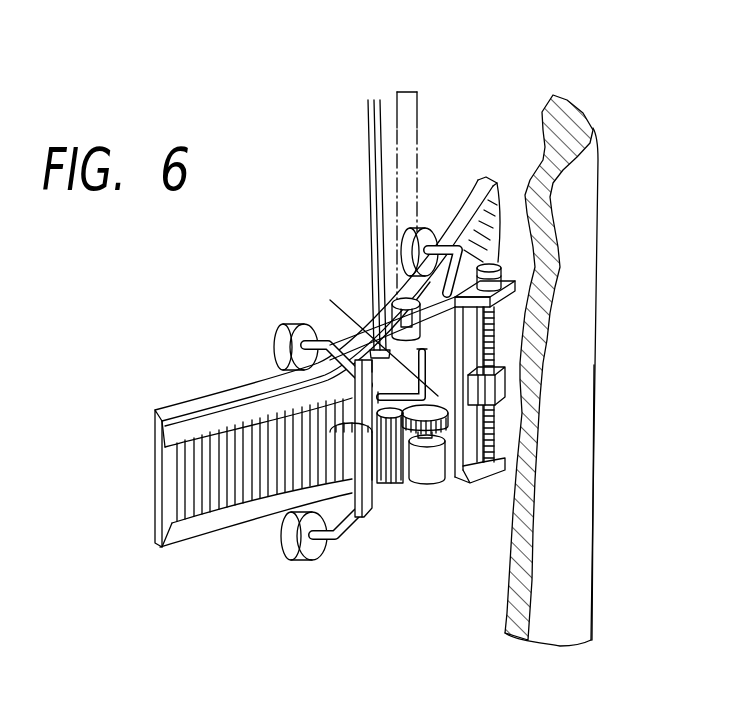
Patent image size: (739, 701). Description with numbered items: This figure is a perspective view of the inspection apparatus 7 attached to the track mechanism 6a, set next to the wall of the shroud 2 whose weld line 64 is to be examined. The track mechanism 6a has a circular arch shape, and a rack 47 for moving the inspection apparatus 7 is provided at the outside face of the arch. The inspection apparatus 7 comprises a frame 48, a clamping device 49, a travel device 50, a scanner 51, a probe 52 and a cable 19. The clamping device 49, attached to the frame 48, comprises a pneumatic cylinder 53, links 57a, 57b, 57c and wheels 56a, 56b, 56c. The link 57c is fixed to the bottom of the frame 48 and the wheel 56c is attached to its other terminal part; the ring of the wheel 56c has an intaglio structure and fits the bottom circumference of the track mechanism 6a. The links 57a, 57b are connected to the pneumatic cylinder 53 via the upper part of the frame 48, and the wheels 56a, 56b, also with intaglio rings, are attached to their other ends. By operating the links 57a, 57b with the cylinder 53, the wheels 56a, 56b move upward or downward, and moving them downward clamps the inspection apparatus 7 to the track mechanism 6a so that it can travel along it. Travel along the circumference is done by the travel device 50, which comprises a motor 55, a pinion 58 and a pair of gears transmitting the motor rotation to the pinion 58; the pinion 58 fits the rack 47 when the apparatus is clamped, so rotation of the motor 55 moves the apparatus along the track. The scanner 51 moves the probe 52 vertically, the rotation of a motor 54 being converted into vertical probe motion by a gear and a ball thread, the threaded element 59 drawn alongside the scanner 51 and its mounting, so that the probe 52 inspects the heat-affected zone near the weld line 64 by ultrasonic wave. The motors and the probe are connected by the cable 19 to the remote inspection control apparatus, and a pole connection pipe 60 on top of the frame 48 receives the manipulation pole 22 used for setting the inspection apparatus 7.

The shroud 2 is at (580, 606).
The track mechanism 6a is at (195, 396).
The inspection apparatus 7 is at (379, 518).
The cable 19 is at (367, 118).
The manipulation pole 22 is at (412, 122).
The rack 47 is at (233, 512).
The frame 48 is at (360, 477).
The clamping device 49 is at (440, 398).
The travel device 50 is at (430, 486).
The scanner 51 is at (505, 471).
The probe 52 is at (500, 375).
The pneumatic cylinder 53 is at (420, 368).
The motor 54 is at (500, 312).
The motor 55 is at (428, 468).
The wheel 56a is at (282, 338).
The wheel 56b is at (430, 226).
The wheel 56c is at (295, 558).
The link 57a is at (300, 326).
The link 57b is at (497, 212).
The link 57c is at (342, 552).
The pinion 58 is at (404, 506).
The threaded rod 59 is at (496, 440).
The pole connection pipe 60 is at (392, 302).
The weld line 64 is at (505, 388).